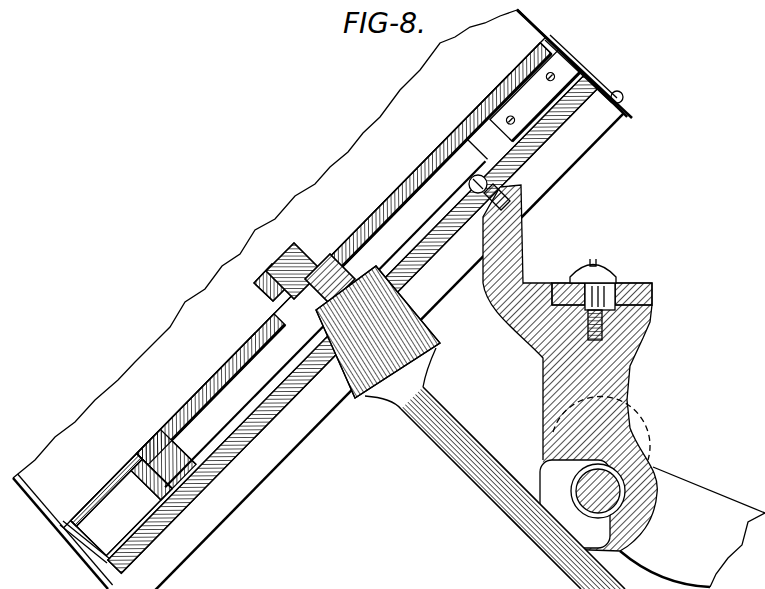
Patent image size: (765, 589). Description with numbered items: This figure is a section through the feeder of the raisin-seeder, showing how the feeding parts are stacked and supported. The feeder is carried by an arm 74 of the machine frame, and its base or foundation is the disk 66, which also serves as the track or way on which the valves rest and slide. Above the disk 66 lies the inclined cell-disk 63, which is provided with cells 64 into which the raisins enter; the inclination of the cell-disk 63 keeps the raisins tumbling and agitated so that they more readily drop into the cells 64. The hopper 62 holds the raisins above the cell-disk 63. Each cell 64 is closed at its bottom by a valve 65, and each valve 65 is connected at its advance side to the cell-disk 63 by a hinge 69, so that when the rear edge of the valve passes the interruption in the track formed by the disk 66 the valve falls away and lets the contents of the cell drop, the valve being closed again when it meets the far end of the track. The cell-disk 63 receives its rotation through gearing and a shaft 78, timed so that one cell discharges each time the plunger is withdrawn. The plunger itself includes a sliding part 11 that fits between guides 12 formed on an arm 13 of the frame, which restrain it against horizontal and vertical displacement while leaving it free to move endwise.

The sliding part 11 is at (618, 278).
The guides 12 is at (554, 282).
The arm 13 is at (616, 396).
The hopper 62 is at (320, 299).
The cell-disk 63 is at (176, 414).
The cells 64 is at (122, 505).
The valve 65 is at (560, 121).
The disk 66 is at (142, 537).
The hinge 69 is at (575, 80).
The arm 74 is at (515, 240).
The shaft 78 is at (456, 464).